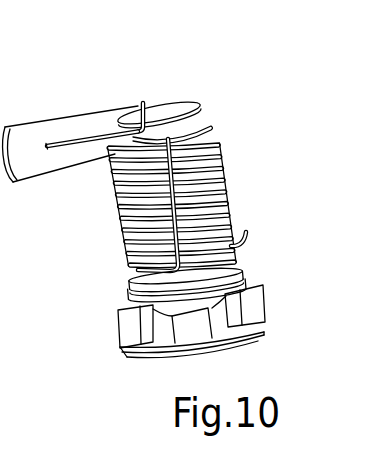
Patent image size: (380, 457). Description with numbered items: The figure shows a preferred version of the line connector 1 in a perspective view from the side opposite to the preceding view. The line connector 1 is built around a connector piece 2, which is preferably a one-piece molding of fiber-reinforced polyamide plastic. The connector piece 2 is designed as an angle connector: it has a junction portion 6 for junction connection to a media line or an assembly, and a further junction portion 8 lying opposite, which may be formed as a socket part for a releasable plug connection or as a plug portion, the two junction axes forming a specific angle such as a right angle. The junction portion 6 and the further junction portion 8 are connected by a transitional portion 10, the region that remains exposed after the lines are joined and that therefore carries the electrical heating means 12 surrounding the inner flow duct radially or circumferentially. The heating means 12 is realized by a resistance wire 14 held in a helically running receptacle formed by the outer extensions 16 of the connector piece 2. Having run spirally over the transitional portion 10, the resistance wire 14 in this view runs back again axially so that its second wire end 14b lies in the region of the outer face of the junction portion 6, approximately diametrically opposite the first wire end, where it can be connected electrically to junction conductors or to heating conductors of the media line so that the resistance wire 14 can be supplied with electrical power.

The line connector 1 is at (231, 85).
The connector piece 2 is at (164, 96).
The junction portion 6 is at (31, 116).
The further junction portion 8 is at (136, 362).
The transitional portion 10 is at (133, 267).
The electrical heating means 12 is at (224, 148).
The resistance wire 14 is at (139, 91).
The second wire end 14b is at (90, 134).
The outer extensions 16 is at (212, 119).